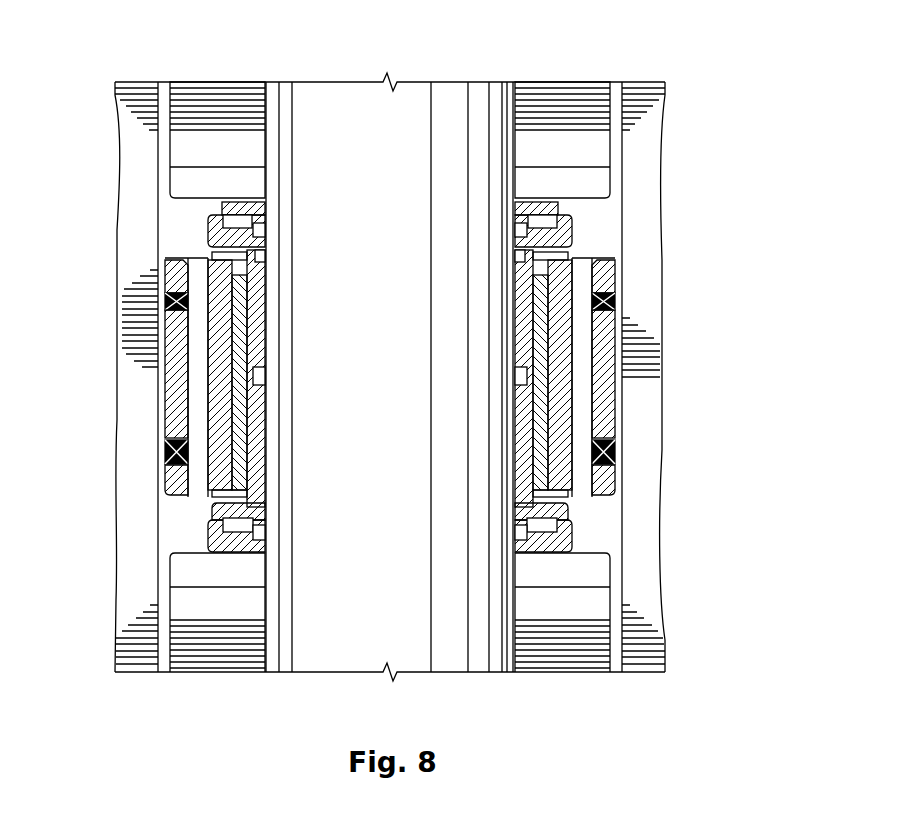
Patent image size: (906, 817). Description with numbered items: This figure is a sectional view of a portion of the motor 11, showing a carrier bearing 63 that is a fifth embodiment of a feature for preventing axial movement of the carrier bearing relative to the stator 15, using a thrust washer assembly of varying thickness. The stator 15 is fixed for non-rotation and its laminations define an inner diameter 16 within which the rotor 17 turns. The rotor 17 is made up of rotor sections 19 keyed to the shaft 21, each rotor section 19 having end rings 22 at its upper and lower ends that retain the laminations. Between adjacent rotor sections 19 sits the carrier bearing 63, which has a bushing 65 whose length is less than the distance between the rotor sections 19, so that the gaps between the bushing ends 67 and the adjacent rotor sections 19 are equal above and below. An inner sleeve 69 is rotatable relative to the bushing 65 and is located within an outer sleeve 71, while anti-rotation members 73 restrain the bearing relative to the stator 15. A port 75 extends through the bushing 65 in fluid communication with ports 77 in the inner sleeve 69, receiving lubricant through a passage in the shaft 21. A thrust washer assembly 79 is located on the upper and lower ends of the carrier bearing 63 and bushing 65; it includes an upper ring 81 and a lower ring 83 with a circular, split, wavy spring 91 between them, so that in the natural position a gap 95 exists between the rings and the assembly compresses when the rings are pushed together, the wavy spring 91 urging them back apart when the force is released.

The motor 11 is at (693, 172).
The stator 15 is at (650, 137).
The inner diameter 16 is at (616, 246).
The rotor 17 is at (575, 73).
The rotor section 19 is at (532, 112).
The shaft 21 is at (335, 113).
The end ring 22 is at (532, 183).
The carrier bearing 63 is at (173, 252).
The bushing 65 is at (262, 283).
The bushing end 67 is at (262, 228).
The inner sleeve 69 is at (240, 342).
The outer sleeve 71 is at (218, 387).
The anti-rotation member 73 is at (163, 285).
The port 75 is at (517, 375).
The port 77 is at (543, 432).
The thrust washer assembly 79 is at (513, 213).
The upper ring 81 is at (515, 518).
The lower ring 83 is at (572, 532).
The wavy spring 91 is at (515, 535).
The gap 95 is at (572, 523).